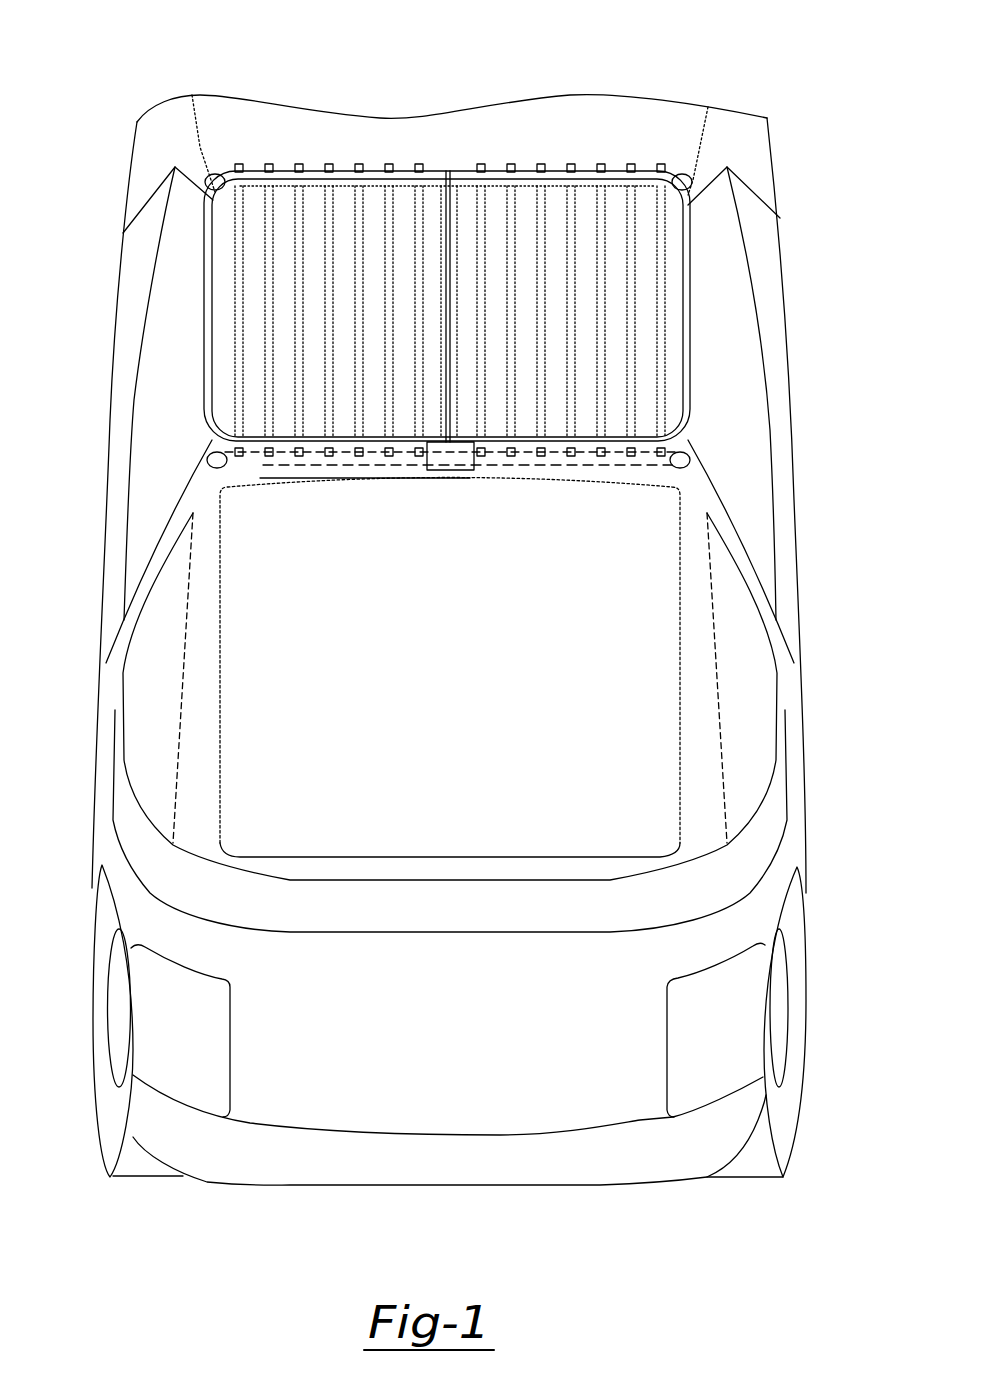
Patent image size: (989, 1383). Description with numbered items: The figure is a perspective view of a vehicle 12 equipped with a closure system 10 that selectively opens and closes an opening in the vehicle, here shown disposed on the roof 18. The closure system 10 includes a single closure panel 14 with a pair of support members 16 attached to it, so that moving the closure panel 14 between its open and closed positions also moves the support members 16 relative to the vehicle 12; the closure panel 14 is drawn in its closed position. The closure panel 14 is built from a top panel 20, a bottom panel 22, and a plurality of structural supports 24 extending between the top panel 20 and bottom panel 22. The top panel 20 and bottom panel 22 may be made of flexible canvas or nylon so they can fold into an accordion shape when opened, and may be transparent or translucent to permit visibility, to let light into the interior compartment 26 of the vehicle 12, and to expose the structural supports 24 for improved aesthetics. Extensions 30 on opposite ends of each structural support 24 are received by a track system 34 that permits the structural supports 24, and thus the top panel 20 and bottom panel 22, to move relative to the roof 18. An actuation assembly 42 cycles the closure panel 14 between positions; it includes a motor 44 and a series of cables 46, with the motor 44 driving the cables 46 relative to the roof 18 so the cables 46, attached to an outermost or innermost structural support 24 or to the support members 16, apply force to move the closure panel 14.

The closure system 10 is at (694, 255).
The vehicle 12 is at (88, 90).
The closure panel 14 is at (256, 367).
The support members 16 is at (209, 297).
The roof 18 is at (667, 110).
The top panel 20 is at (253, 227).
The bottom panel 22 is at (377, 230).
The structural supports 24 is at (313, 207).
The interior compartment 26 is at (658, 555).
The extensions 30 is at (245, 467).
The track system 34 is at (262, 483).
The actuation assembly 42 is at (439, 486).
The motor 44 is at (465, 475).
The cables 46 is at (457, 224).